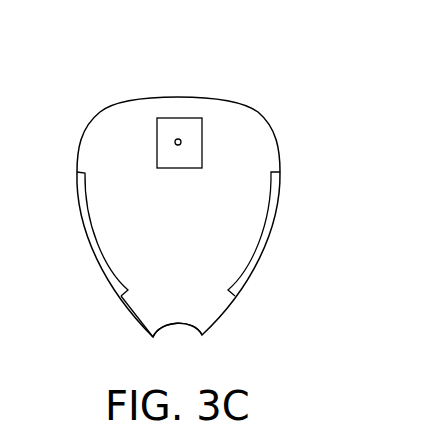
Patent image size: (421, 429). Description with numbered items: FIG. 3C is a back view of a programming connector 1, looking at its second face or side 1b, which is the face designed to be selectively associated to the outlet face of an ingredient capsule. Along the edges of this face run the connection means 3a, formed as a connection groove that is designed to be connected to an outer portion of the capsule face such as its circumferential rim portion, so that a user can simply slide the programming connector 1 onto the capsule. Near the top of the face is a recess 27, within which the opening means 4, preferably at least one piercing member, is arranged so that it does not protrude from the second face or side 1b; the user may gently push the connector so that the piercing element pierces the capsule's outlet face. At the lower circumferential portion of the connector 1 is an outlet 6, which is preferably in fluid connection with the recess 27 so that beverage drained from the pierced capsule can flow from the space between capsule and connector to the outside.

The programming connector 1 is at (272, 137).
The second face or side 1b is at (145, 314).
The connection means 3a is at (92, 238).
The opening means 4 is at (178, 138).
The outlet 6 is at (180, 332).
The recess 27 is at (167, 125).